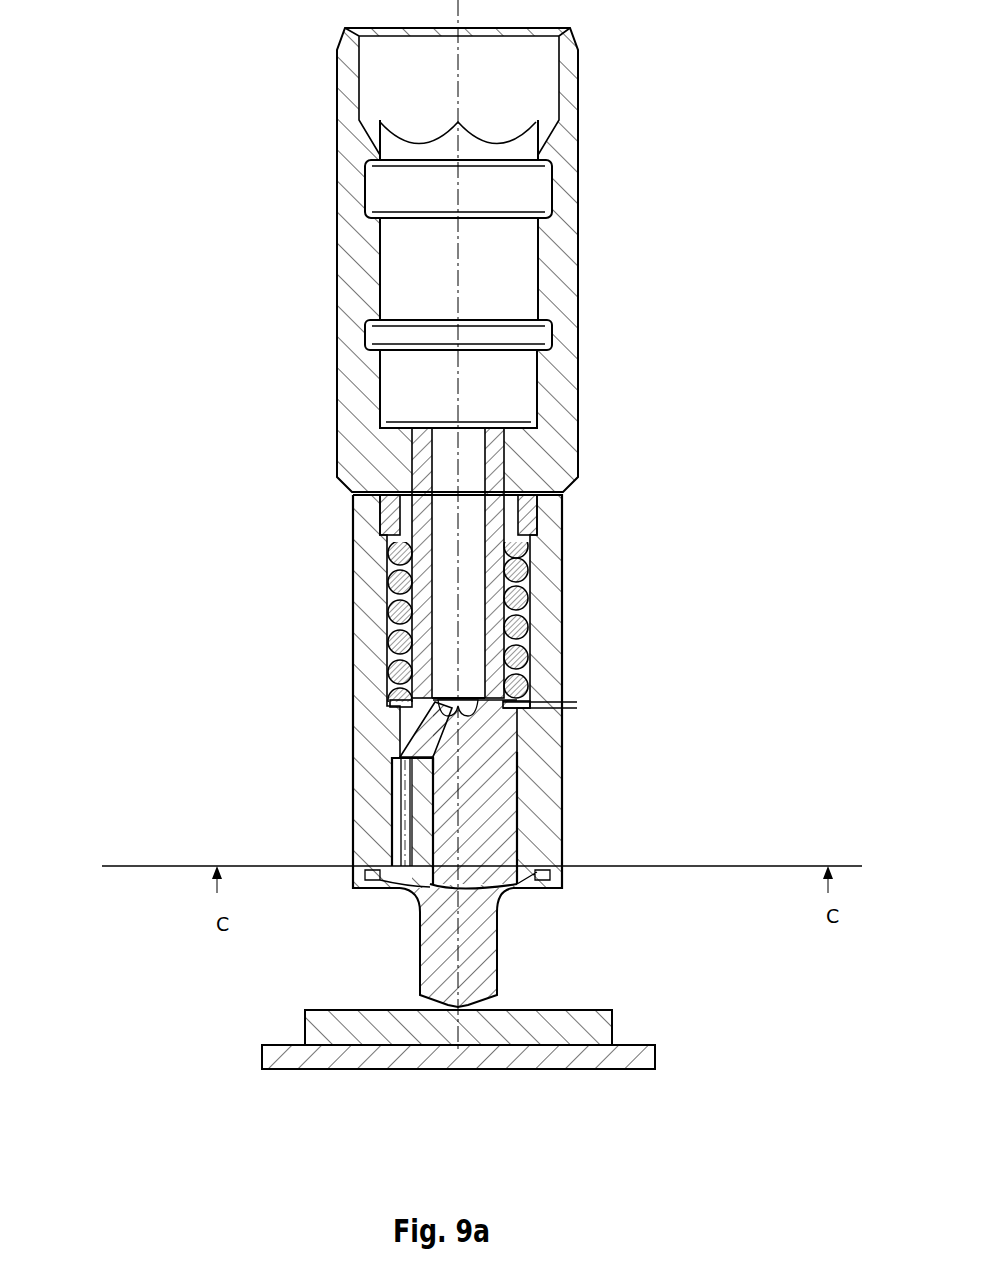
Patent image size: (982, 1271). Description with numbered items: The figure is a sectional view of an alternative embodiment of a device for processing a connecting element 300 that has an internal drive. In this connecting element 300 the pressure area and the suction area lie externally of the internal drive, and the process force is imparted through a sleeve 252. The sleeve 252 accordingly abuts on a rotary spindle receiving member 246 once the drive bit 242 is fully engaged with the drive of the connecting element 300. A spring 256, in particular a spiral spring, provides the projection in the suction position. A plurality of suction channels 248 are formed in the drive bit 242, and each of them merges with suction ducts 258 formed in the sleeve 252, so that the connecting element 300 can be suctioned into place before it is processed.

The rotary spindle receiving member 246 is at (365, 263).
The sleeve 252 is at (370, 594).
The spring 256 is at (530, 577).
The suction channels 248 is at (398, 752).
The drive bit 242 is at (475, 755).
The suction ducts 258 is at (400, 828).
The connecting element 300 is at (497, 957).